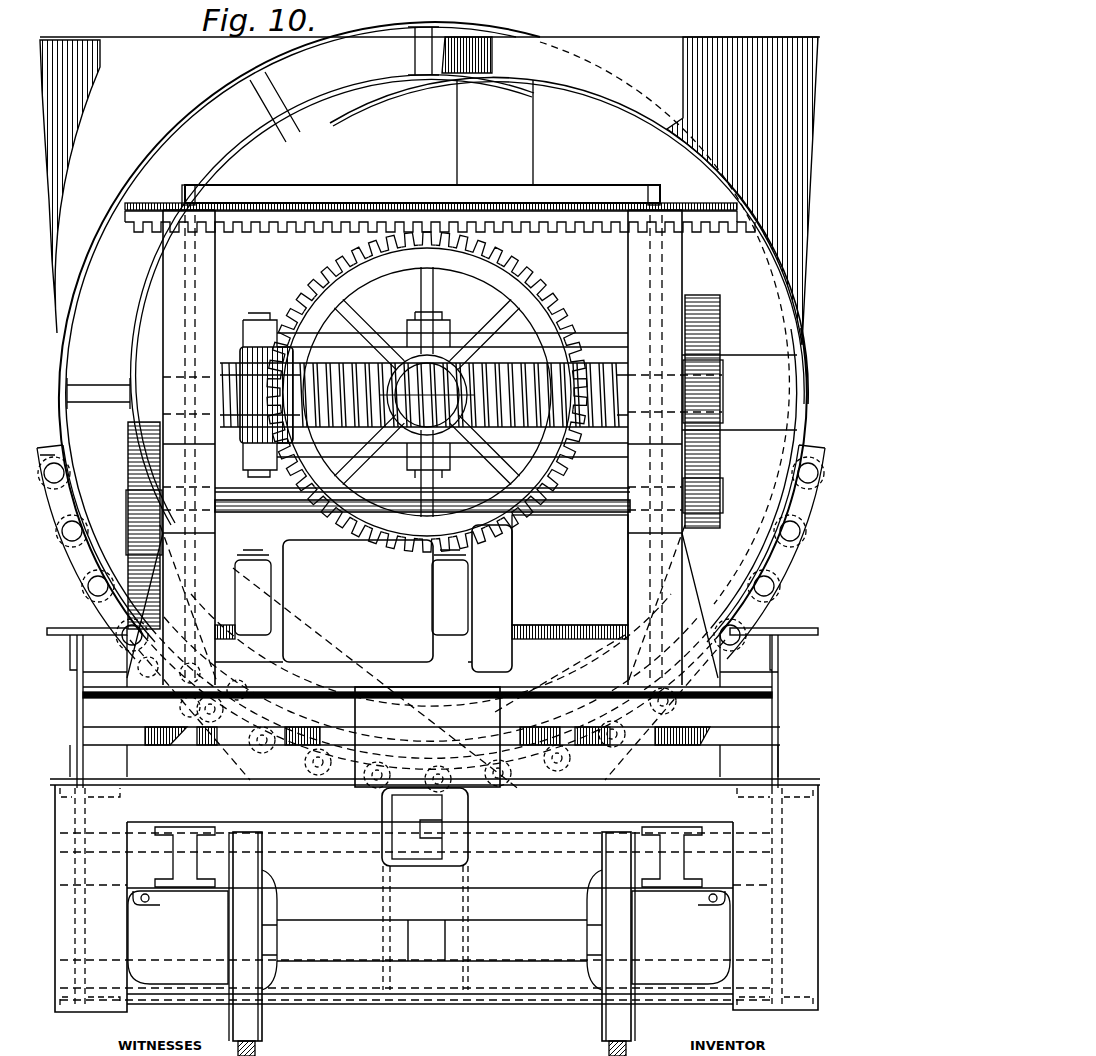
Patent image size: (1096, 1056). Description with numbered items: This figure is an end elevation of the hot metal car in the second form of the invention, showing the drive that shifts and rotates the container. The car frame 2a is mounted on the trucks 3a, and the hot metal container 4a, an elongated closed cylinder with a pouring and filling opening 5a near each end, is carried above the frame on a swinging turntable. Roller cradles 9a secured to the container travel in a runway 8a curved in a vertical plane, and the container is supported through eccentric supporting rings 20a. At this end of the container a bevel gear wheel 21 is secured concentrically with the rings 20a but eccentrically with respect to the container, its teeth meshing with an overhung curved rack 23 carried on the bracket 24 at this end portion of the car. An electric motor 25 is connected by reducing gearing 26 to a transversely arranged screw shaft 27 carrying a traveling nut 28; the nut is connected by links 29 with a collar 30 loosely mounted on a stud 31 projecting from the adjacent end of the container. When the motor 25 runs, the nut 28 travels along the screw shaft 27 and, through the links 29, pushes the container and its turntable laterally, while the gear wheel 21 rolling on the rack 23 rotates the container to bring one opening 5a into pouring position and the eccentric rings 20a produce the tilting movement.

The car frame 2a is at (780, 712).
The trucks 3a is at (429, 944).
The hot metal container 4a is at (569, 240).
The pouring and filling opening 5a is at (130, 50).
The runway 8a is at (177, 735).
The roller cradles 9a is at (431, 552).
The eccentric supporting rings 20a is at (193, 110).
The bevel gear wheel 21 is at (315, 274).
The overhung curved rack 23 is at (366, 212).
The bracket 24 is at (165, 318).
The electric motor 25 is at (421, 593).
The reducing gearing 26 is at (135, 514).
The screw shaft 27 is at (424, 381).
The traveling nut 28 is at (256, 352).
The links 29 is at (370, 340).
The collar 30 is at (452, 440).
The stud 31 is at (447, 425).